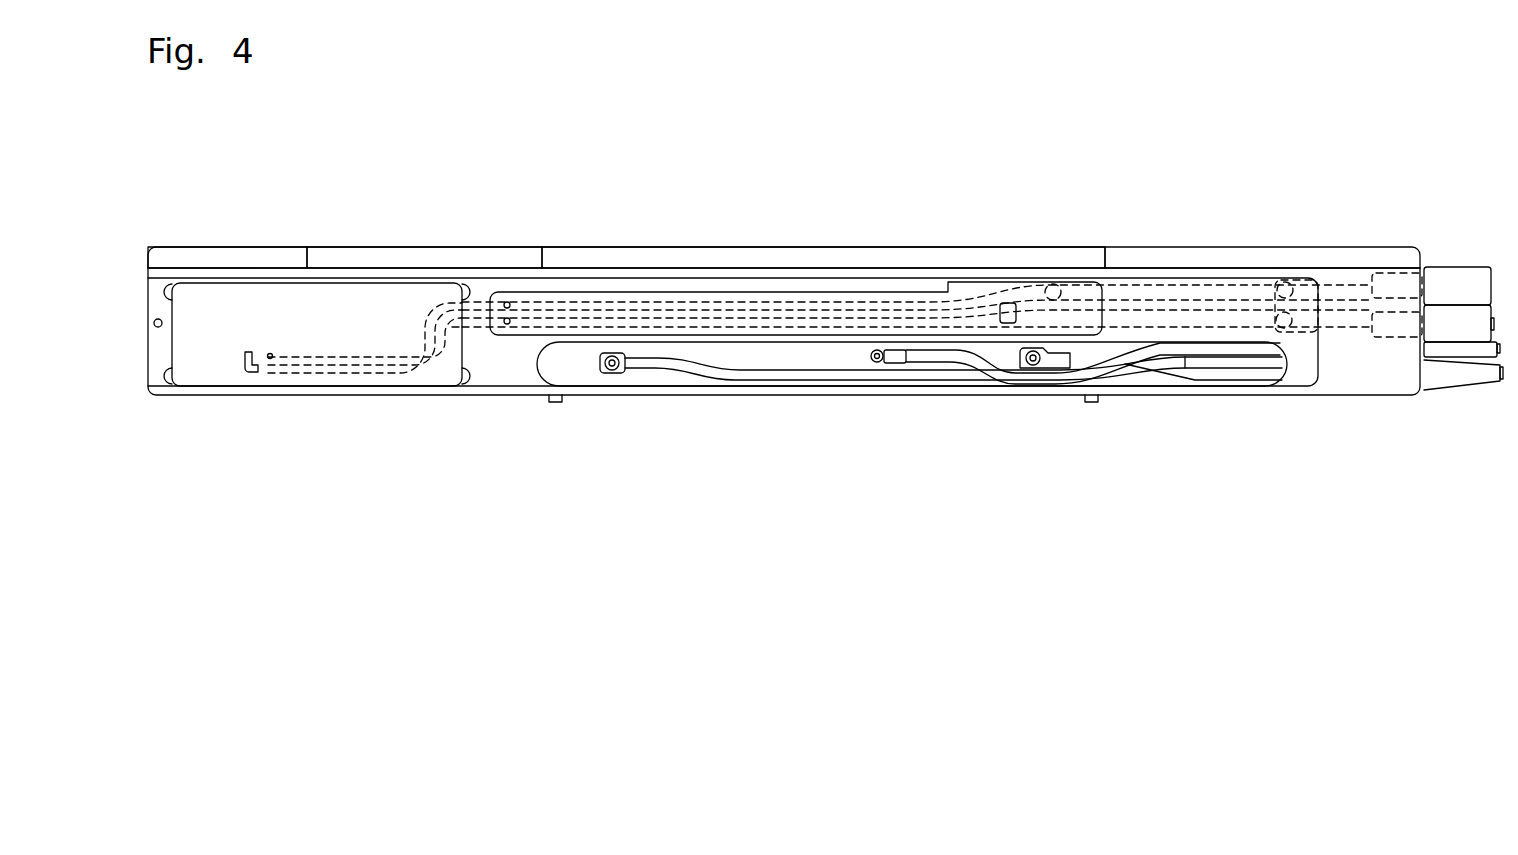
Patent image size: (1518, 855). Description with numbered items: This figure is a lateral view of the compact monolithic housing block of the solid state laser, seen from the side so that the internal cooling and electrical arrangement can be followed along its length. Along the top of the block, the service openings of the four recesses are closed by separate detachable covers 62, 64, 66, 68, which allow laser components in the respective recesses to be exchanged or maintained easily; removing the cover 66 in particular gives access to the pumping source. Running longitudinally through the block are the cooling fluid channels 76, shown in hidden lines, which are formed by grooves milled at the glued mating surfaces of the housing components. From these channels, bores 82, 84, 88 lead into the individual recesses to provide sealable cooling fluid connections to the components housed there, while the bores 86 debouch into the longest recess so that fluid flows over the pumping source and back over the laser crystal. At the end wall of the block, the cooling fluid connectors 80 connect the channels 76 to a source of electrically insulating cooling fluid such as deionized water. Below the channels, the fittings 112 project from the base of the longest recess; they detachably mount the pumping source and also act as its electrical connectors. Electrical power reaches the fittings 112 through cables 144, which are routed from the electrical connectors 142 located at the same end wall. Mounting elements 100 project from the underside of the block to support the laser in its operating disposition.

The cover 62 is at (205, 260).
The cover 64 is at (389, 260).
The cover 66 is at (613, 260).
The cover 68 is at (1172, 255).
The cooling fluid channels 76 is at (803, 305).
The cooling fluid connectors 80 is at (1447, 320).
The bore 82 is at (270, 360).
The bore 84 is at (510, 324).
The bores 86 is at (1053, 292).
The bore 88 is at (1287, 318).
The mounting elements 100 is at (557, 402).
The fittings 112 is at (613, 368).
The electrical connectors 142 is at (1455, 350).
The cables 144 is at (762, 373).